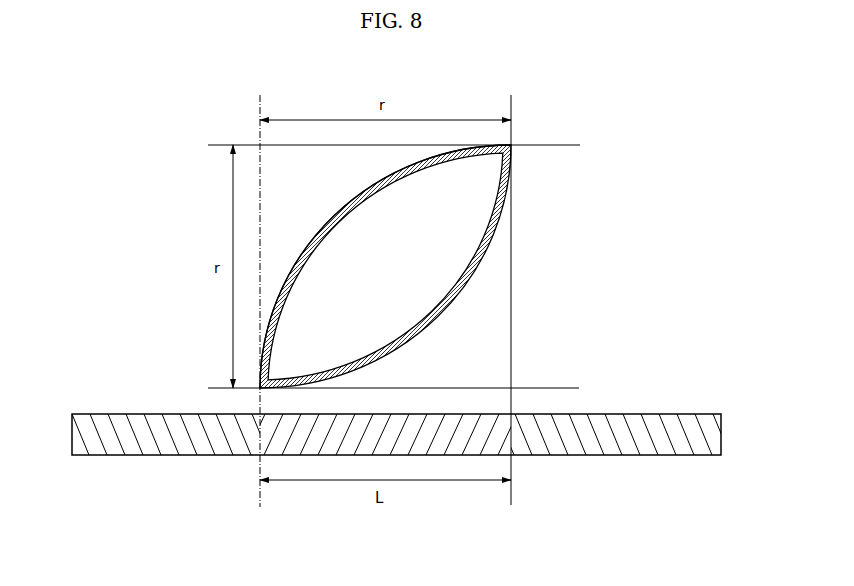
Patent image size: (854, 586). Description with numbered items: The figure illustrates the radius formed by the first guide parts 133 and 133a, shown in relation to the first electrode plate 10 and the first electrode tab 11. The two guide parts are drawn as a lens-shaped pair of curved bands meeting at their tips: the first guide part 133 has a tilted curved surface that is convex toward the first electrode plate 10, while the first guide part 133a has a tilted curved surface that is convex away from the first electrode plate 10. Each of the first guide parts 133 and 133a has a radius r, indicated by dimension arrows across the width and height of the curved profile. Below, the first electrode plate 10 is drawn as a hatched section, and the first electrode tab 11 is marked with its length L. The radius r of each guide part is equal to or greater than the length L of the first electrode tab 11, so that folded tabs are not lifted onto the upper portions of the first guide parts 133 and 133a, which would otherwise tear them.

The first electrode plate 10 is at (655, 413).
The first electrode tab 11 is at (445, 450).
The first guide part 133 is at (453, 304).
The first guide part 133a is at (326, 224).